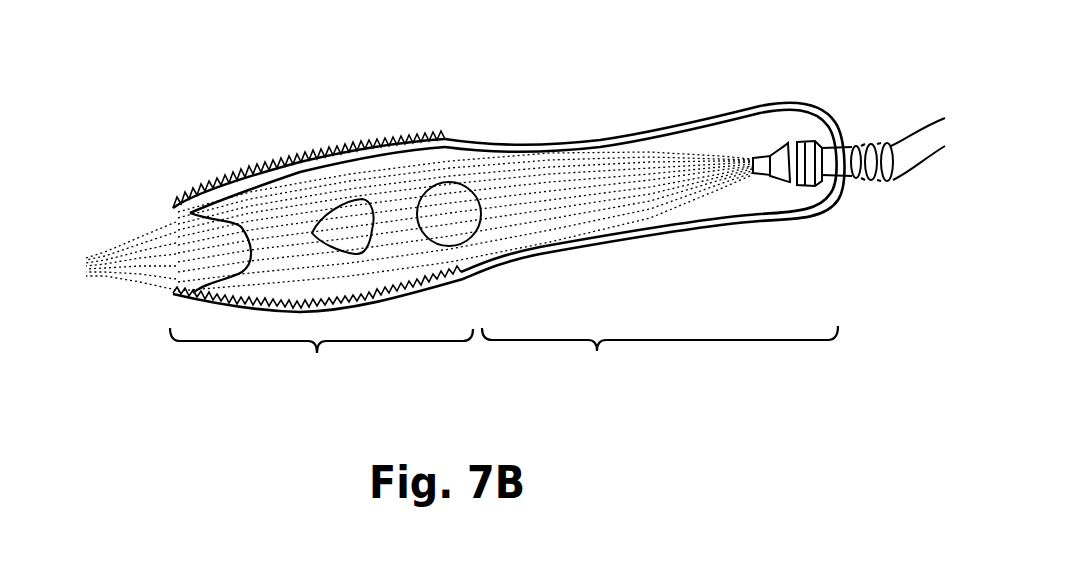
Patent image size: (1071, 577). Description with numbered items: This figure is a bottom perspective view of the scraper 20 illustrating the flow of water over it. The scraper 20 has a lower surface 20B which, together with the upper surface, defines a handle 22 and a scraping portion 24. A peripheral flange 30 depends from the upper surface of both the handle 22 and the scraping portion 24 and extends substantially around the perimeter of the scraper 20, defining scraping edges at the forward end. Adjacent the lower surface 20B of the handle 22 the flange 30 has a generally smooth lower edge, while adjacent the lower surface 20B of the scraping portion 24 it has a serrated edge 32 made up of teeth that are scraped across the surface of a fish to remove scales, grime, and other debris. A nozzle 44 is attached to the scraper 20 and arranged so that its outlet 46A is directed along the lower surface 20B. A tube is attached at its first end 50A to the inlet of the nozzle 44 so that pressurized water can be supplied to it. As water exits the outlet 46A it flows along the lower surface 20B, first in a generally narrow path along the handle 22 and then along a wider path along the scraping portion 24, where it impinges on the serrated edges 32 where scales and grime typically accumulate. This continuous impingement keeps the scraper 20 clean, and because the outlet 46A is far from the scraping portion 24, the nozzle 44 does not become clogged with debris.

The scraper 20 is at (458, 98).
The lower surface 20B is at (708, 147).
The handle 22 is at (660, 355).
The scraping portion 24 is at (321, 356).
The peripheral flange 30 is at (693, 224).
The serrated edge 32 is at (377, 140).
The nozzle 44 is at (845, 134).
The outlet 46A is at (752, 160).
The first end of tube 50A is at (897, 150).